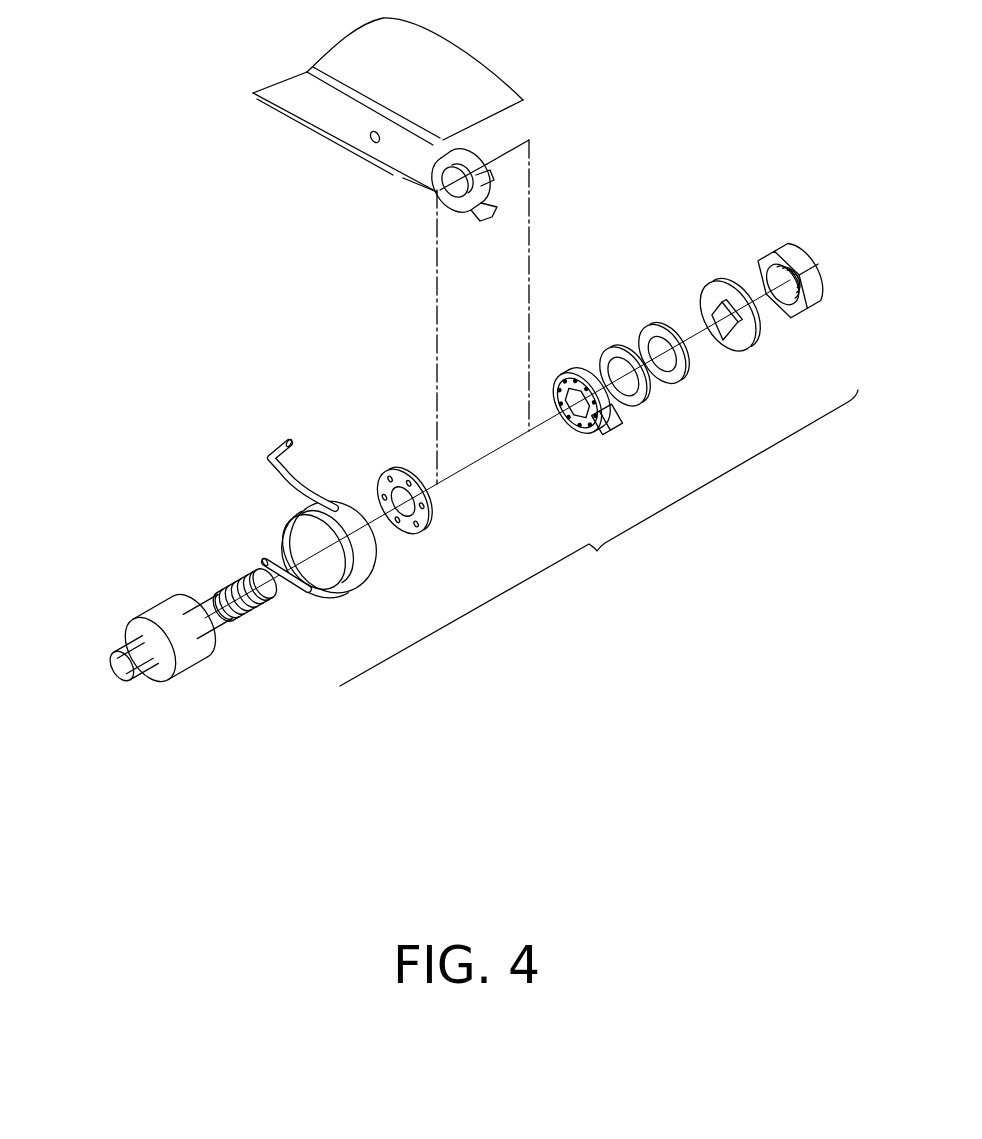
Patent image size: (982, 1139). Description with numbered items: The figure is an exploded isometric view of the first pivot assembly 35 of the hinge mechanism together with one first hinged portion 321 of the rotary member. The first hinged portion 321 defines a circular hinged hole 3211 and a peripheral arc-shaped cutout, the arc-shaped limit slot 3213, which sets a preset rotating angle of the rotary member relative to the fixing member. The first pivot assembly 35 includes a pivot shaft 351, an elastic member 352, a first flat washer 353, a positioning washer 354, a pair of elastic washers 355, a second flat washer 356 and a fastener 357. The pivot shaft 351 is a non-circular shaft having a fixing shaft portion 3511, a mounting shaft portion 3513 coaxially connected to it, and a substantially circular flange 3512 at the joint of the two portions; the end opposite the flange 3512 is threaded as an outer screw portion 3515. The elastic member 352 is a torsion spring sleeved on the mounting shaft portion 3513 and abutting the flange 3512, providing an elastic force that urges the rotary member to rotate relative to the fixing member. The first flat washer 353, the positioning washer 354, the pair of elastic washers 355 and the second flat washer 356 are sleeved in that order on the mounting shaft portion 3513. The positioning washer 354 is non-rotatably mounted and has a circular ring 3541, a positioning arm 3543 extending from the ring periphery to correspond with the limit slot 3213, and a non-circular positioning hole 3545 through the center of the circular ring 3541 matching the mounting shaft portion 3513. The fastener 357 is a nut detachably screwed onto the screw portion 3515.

The first hinged portion 321 is at (456, 155).
The circular hinged hole 3211 is at (455, 182).
The arc-shaped limit slot 3213 is at (484, 185).
The first pivot assembly 35 is at (599, 538).
The pivot shaft 351 is at (182, 598).
The fixing shaft portion 3511 is at (118, 632).
The flange 3512 is at (152, 614).
The mounting shaft portion 3513 is at (202, 603).
The outer screw portion 3515 is at (228, 587).
The elastic member 352 is at (351, 568).
The first flat washer 353 is at (427, 517).
The positioning washer 354 is at (582, 411).
The circular ring 3541 is at (582, 368).
The positioning arm 3543 is at (610, 432).
The positioning hole 3545 is at (561, 384).
The elastic washers 355 is at (706, 378).
The second flat washer 356 is at (735, 343).
The fastener 357 is at (811, 311).